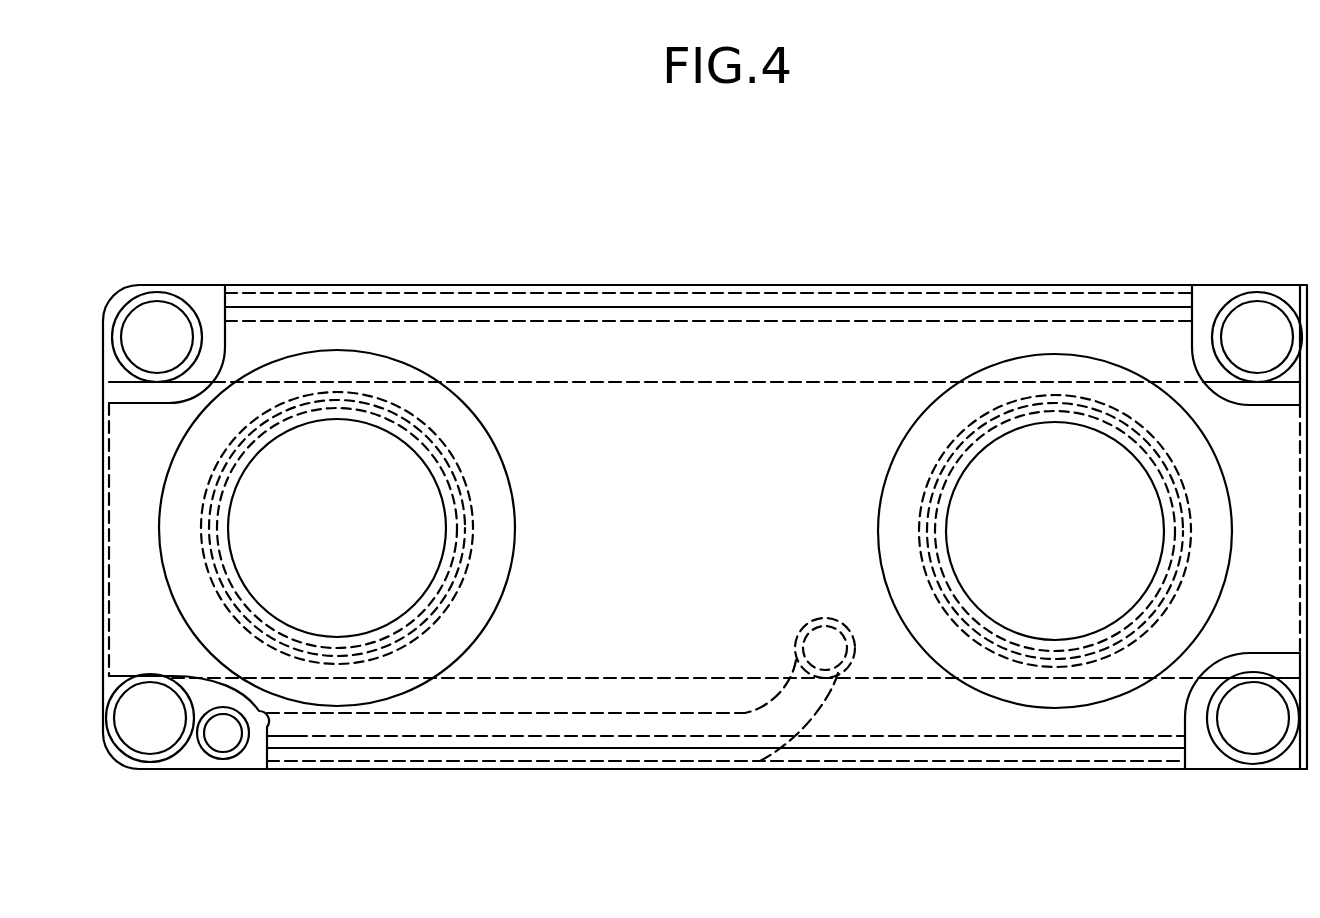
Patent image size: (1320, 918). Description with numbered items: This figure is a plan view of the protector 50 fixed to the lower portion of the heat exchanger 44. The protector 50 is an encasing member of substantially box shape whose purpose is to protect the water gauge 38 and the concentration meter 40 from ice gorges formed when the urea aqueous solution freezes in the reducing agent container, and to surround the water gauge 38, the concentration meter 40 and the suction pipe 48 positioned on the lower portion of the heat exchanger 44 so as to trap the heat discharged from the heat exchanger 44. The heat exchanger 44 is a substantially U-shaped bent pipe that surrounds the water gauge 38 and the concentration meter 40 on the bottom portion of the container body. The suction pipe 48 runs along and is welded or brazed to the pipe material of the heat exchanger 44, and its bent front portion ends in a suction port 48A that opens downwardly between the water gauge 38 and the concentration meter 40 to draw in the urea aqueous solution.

The protector 50 is at (697, 285).
The water gauge 38 is at (340, 437).
The concentration meter 40 is at (1045, 452).
The heat exchanger 44 is at (145, 728).
The suction pipe 48 is at (227, 743).
The suction port 48A is at (824, 657).